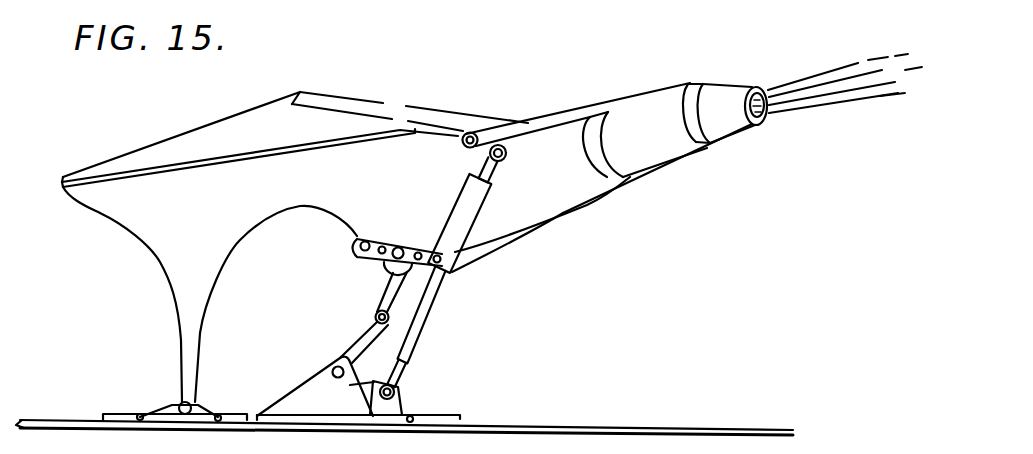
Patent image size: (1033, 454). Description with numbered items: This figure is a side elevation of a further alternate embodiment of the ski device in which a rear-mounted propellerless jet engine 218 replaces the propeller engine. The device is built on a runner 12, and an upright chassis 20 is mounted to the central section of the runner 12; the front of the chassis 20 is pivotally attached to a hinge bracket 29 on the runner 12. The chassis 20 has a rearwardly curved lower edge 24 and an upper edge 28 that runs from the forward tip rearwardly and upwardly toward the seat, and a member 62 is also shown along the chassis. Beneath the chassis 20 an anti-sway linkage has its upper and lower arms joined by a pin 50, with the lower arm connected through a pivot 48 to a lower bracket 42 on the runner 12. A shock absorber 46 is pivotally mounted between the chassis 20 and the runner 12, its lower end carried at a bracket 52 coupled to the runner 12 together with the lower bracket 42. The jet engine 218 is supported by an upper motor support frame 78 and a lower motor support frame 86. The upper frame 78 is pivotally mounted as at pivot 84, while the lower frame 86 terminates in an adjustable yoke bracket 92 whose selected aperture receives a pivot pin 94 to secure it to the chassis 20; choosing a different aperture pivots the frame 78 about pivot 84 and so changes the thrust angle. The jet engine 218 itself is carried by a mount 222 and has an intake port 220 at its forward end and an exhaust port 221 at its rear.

The runner 12 is at (48, 420).
The chassis 20 is at (143, 231).
The lower edge 24 is at (262, 223).
The upper edge 28 is at (135, 152).
The beam 62 is at (240, 143).
The upper motor support frame 78 is at (553, 114).
The pivot 84 is at (474, 132).
The pivot pin 94 is at (398, 241).
The bracket 92 is at (372, 268).
The pin 50 is at (374, 317).
The shock absorber 46 is at (437, 308).
The bracket 52 is at (402, 406).
The pivot 48 is at (343, 378).
The lower bracket 42 is at (305, 390).
The hinge bracket 29 is at (202, 410).
The lower motor support frame 86 is at (508, 244).
The intake port 220 is at (580, 168).
The mount 222 is at (690, 157).
The jet engine 218 is at (718, 134).
The exhaust port 221 is at (767, 120).